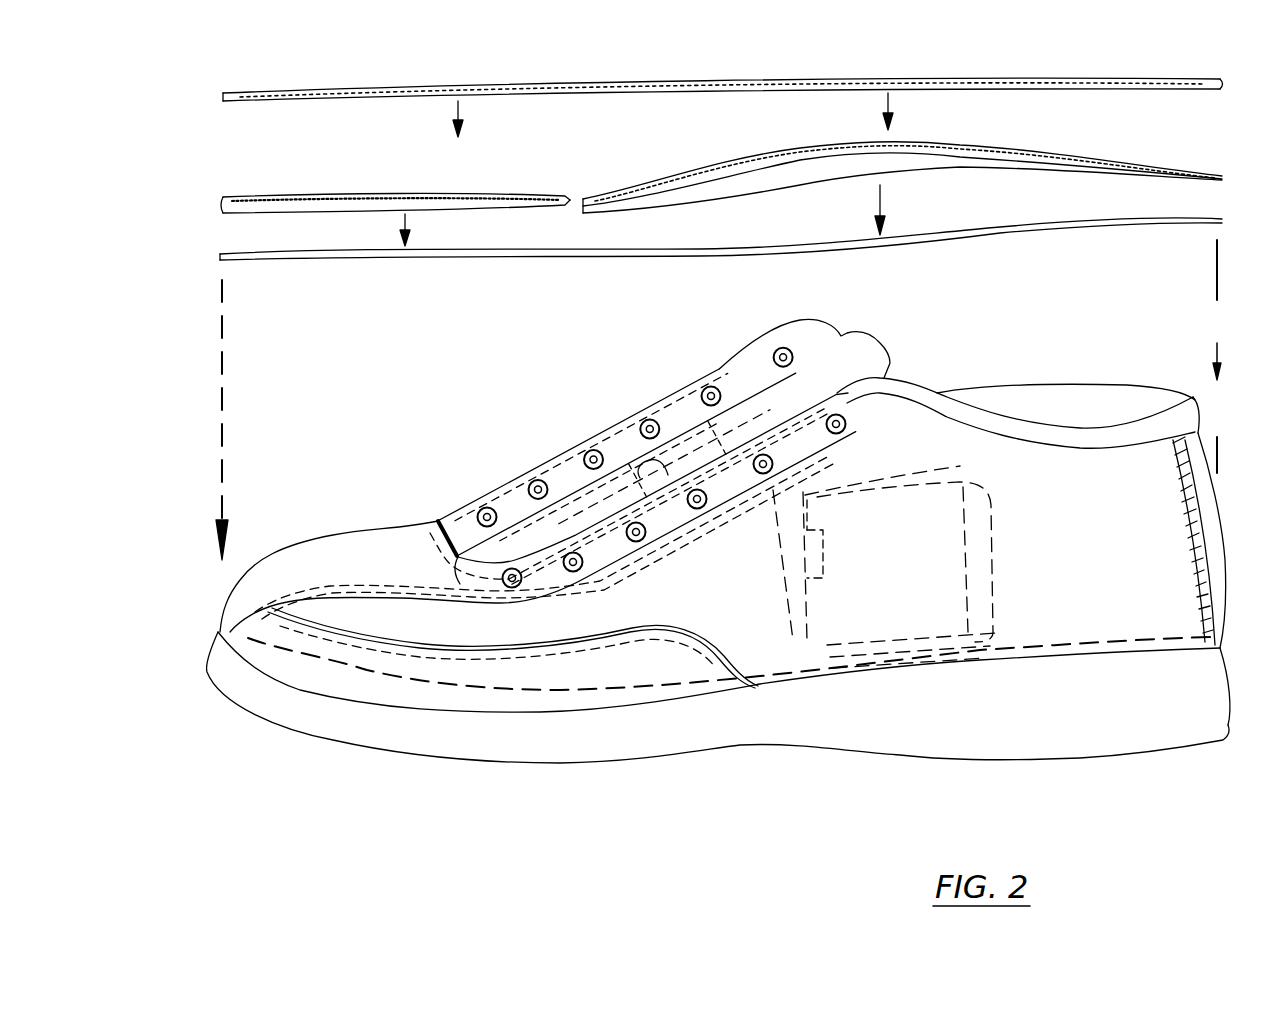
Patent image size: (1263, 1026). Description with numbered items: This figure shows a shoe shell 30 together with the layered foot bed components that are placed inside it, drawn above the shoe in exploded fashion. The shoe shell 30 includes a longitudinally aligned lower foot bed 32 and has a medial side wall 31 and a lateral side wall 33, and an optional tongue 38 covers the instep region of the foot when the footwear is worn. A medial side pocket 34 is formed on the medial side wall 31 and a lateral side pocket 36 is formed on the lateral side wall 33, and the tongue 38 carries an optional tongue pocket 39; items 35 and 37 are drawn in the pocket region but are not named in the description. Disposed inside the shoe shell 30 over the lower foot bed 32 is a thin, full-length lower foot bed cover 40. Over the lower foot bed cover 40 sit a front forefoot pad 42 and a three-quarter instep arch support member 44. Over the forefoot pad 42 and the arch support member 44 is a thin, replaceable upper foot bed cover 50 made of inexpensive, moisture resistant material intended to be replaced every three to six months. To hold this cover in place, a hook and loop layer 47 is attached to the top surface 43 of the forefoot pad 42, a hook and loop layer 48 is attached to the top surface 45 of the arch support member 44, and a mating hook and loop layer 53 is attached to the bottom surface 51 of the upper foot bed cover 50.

The shoe shell 30 is at (1020, 315).
The medial side wall 31 is at (984, 404).
The lower foot bed 32 is at (1029, 652).
The lateral side wall 33 is at (1137, 527).
The medial side pocket 34 is at (985, 514).
The battery 35 is at (823, 553).
The lateral side pocket 36 is at (948, 468).
The electronics module 37 is at (808, 530).
The tongue 38 is at (875, 336).
The tongue pocket 39 is at (757, 413).
The lower foot bed cover 40 is at (317, 254).
The forefoot pad 42 is at (360, 190).
The top surface 43 is at (476, 196).
The hook and loop layer 47 is at (273, 197).
The arch support member 44 is at (676, 183).
The top surface 45 is at (805, 145).
The hook and loop layer 48 is at (970, 148).
The upper foot bed cover 50 is at (379, 72).
The bottom surface 51 is at (422, 104).
The hook and loop layer 53 is at (556, 96).